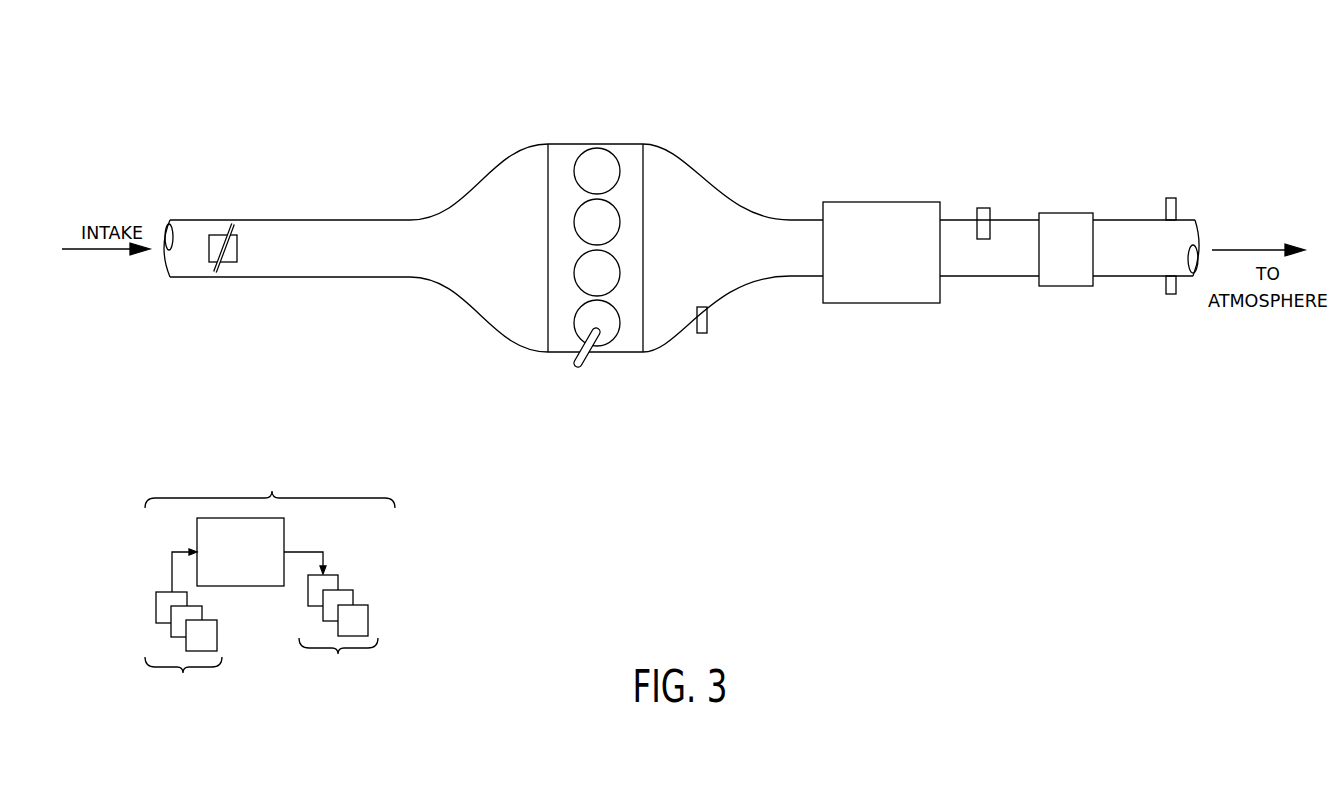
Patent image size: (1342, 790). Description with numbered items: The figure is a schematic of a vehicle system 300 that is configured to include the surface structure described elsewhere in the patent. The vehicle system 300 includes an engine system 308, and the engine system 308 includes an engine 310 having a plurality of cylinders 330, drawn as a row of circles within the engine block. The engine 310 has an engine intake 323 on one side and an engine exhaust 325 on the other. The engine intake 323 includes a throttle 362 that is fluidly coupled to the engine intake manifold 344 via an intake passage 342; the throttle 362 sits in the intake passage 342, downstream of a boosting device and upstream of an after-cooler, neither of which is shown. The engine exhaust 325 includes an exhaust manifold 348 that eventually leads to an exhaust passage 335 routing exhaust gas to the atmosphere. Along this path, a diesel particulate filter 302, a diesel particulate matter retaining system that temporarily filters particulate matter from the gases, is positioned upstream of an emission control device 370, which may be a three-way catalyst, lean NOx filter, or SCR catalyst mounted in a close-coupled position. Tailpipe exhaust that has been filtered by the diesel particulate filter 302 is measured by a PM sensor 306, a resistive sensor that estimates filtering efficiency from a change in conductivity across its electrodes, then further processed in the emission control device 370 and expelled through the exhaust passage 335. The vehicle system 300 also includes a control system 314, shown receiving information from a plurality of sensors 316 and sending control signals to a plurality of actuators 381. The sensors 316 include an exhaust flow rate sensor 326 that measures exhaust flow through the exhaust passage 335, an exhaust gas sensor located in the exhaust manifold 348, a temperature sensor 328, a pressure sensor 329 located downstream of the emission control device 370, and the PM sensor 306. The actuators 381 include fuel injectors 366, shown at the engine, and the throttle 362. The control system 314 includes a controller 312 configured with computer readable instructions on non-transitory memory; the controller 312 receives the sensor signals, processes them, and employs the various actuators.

The vehicle system 300 is at (114, 80).
The diesel particulate filter 302 is at (919, 287).
The PM sensor 306 is at (977, 210).
The engine system 308 is at (637, 115).
The engine 310 is at (645, 231).
The controller 312 is at (249, 555).
The control system 314 is at (270, 580).
The sensors 316 is at (183, 652).
The engine intake 323 is at (349, 206).
The engine exhaust 325 is at (748, 186).
The exhaust flow rate sensor 326 is at (709, 312).
The temperature sensor 328 is at (1166, 284).
The pressure sensor 329 is at (1166, 208).
The cylinder 330 is at (618, 160).
The exhaust passage 335 is at (1132, 218).
The intake passage 342 is at (273, 278).
The engine intake manifold 344 is at (487, 259).
The exhaust manifold 348 is at (705, 259).
The throttle 362 is at (238, 258).
The fuel injectors 366 is at (590, 354).
The emission control device 370 is at (1053, 259).
The actuators 381 is at (338, 636).